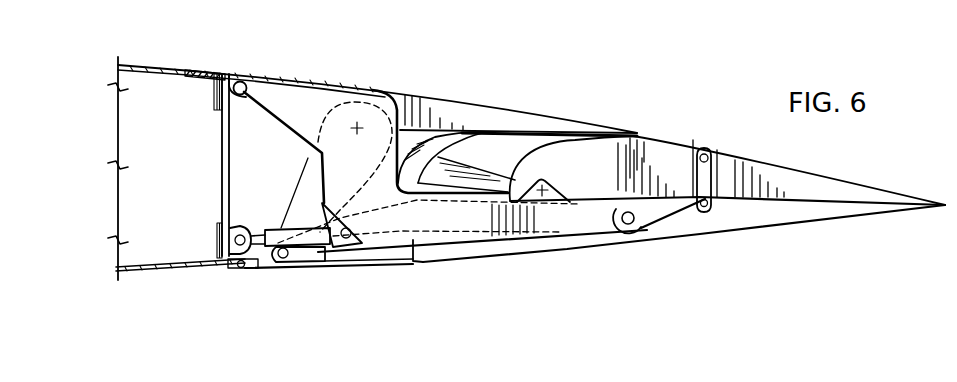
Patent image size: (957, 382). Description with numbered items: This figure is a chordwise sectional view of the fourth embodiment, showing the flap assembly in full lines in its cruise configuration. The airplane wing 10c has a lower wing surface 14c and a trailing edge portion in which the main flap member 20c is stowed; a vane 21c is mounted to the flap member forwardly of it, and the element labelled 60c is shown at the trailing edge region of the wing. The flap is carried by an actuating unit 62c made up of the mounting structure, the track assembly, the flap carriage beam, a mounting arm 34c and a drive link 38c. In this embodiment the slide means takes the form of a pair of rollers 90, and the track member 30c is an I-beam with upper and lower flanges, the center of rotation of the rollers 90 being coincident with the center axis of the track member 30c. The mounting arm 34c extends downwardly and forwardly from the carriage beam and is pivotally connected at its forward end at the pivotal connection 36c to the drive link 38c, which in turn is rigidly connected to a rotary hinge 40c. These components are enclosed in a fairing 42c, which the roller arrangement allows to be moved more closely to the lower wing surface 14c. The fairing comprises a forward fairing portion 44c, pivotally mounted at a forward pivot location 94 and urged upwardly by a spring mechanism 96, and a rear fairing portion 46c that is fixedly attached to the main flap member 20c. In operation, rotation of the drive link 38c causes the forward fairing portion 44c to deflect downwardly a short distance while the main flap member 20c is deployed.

The airplane wing 10c is at (317, 74).
The lower wing surface 14c is at (155, 272).
The main flap member 20c is at (678, 147).
The vane 21c is at (458, 128).
The track member 30c is at (540, 205).
The mounting arm 34c is at (312, 262).
The pivotal connection 36c is at (281, 270).
The drive link 38c is at (300, 192).
The rotary hinge 40c is at (359, 127).
The fairing 42c is at (431, 265).
The forward fairing portion 44c is at (326, 272).
The rear fairing portion 46c is at (718, 238).
The trailing edge wedge 60c is at (460, 105).
The actuating unit 62c is at (482, 244).
The rollers 90 is at (613, 205).
The forward pivot location 94 is at (236, 272).
The spring mechanism 96 is at (247, 273).